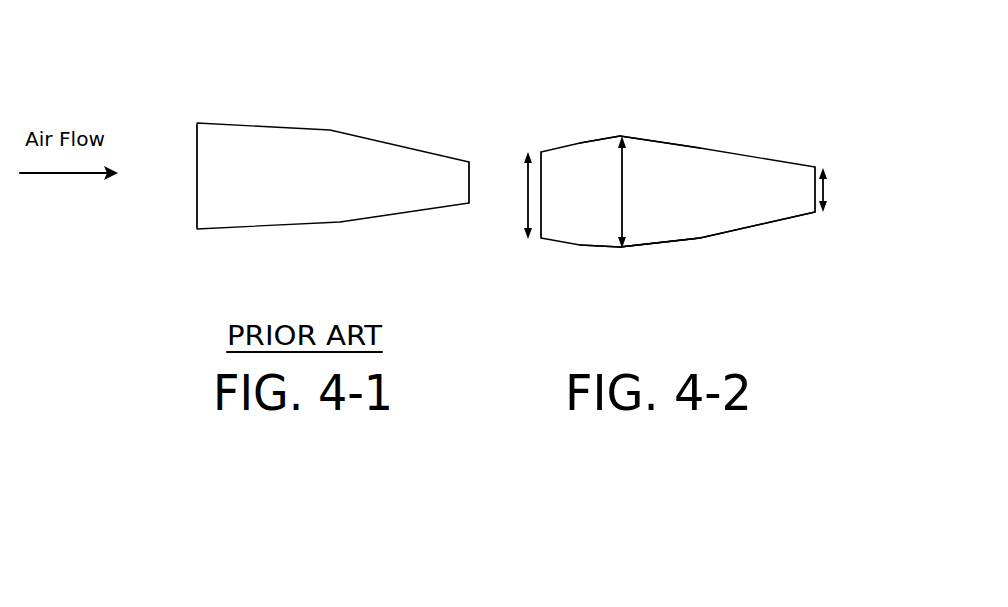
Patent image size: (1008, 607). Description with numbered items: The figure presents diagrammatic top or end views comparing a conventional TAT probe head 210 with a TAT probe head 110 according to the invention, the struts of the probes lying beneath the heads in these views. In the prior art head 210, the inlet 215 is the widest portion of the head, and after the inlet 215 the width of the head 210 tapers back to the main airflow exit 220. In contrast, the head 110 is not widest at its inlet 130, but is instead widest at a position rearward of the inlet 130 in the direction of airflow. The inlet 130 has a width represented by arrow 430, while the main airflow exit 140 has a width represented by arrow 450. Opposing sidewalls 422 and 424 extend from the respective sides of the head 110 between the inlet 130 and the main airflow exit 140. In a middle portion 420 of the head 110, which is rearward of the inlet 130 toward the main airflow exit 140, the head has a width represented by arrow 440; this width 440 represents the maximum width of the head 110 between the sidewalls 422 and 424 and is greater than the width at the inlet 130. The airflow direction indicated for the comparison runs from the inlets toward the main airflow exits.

In FIG. 4-1, the conventional TAT probe head 210 is at (309, 112).
In FIG. 4-1, the inlet 215 is at (197, 208).
In FIG. 4-1, the main airflow exit 220 is at (470, 190).
In FIG. 4-2, the TAT probe head 110 is at (708, 120).
In FIG. 4-2, the inlet 130 is at (541, 208).
In FIG. 4-2, the main airflow exit 140 is at (812, 180).
In FIG. 4-2, the middle portion 420 is at (640, 218).
In FIG. 4-2, the sidewall 422 is at (603, 135).
In FIG. 4-2, the sidewall 424 is at (613, 249).
In FIG. 4-2, the arrow representing inlet width 430 is at (523, 170).
In FIG. 4-2, the arrow representing maximum width 440 is at (625, 178).
In FIG. 4-2, the arrow representing main airflow exit width 450 is at (828, 186).